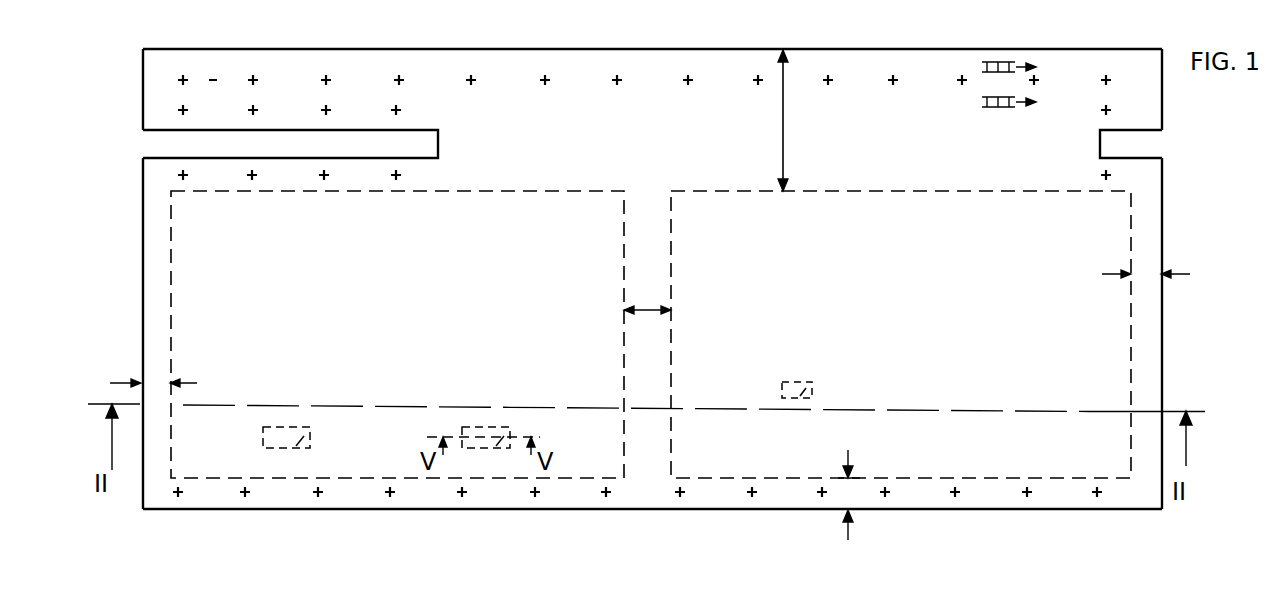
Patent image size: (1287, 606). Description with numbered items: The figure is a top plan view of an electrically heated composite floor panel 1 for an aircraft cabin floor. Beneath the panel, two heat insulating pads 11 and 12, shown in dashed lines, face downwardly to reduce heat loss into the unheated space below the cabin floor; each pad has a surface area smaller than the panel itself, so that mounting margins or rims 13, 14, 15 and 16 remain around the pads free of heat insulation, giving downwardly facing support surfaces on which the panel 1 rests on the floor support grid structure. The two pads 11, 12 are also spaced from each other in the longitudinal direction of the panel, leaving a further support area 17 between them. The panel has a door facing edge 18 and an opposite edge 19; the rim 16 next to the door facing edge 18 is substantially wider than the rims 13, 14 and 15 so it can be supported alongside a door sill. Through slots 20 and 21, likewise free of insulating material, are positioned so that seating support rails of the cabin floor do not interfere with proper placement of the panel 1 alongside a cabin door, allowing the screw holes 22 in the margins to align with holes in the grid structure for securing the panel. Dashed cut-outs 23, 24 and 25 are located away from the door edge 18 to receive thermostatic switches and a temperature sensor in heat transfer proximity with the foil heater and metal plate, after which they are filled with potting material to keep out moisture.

The panel 1 is at (118, 301).
The heat insulating pad 11 is at (1131, 316).
The heat insulating pad 12 is at (168, 337).
The margin or rim 13 is at (1145, 278).
The margin or rim 14 is at (852, 492).
The margin or rim 15 is at (150, 385).
The margin or rim 16 is at (786, 128).
The support area 17 is at (640, 310).
The door facing edge 18 is at (838, 48).
The edge 19 is at (556, 510).
The through slot 20 is at (1143, 142).
The through slot 21 is at (146, 143).
The screw holes 22 is at (1104, 78).
The cut-out 23 is at (310, 424).
The cut-out 24 is at (495, 425).
The cut-out 25 is at (812, 380).